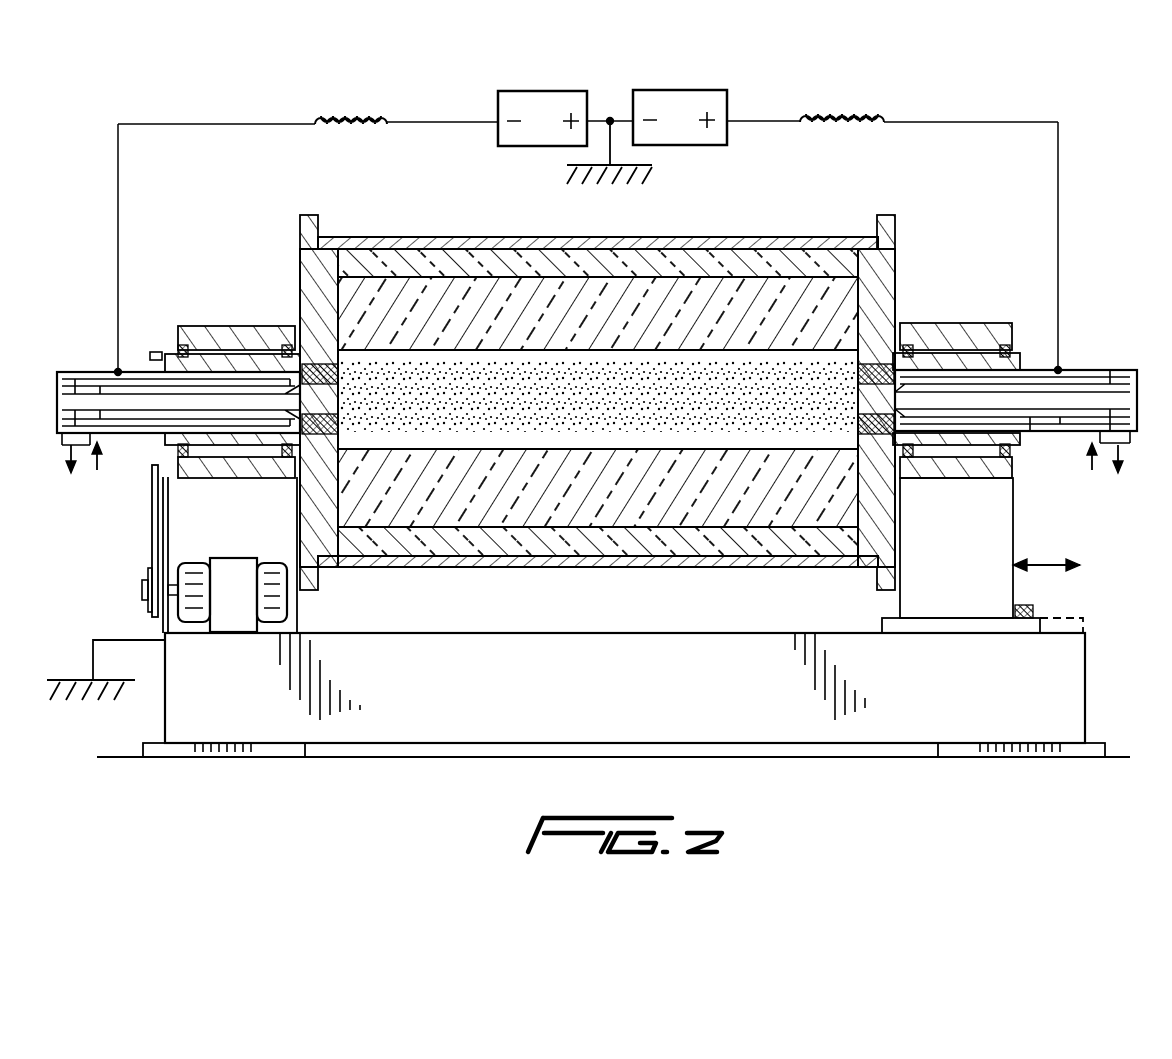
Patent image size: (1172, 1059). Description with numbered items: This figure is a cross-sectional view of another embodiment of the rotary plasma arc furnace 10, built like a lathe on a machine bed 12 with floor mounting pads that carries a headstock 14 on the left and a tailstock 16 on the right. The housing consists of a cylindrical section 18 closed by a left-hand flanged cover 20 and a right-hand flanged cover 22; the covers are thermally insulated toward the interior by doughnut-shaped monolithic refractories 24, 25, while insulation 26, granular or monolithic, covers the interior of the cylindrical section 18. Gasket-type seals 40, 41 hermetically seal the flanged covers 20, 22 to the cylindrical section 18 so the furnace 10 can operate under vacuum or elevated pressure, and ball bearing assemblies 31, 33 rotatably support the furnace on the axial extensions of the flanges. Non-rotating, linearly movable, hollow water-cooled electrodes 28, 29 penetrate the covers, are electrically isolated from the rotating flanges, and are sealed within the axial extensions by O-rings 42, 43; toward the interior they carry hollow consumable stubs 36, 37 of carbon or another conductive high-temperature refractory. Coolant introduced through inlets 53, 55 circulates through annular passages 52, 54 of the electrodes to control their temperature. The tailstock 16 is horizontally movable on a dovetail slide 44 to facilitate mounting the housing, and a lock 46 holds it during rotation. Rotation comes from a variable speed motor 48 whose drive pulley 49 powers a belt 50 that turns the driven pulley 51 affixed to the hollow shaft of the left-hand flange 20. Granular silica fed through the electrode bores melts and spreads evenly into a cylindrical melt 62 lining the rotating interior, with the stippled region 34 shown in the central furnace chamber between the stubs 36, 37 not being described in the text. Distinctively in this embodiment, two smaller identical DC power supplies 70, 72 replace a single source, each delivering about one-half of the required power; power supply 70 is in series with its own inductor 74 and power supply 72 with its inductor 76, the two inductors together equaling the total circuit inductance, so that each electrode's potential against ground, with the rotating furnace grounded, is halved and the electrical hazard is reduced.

The furnace 10 is at (405, 230).
The machine bed 12 is at (1085, 672).
The headstock 14 is at (255, 325).
The tailstock 16 is at (1013, 522).
The cylindrical section 18 is at (551, 236).
The left-hand flanged cover 20 is at (300, 250).
The right-hand flanged cover 22 is at (900, 264).
The doughnut-shaped monolithic refractory 24 is at (345, 357).
The doughnut-shaped monolithic refractory 25 is at (856, 358).
The insulation 26 is at (740, 252).
The electrode 28 is at (70, 370).
The electrode 29 is at (1105, 370).
The ball bearing assembly 31 is at (178, 345).
The ball bearing assembly 33 is at (1015, 350).
The charge material 34 is at (513, 415).
The consumable stub 36 is at (345, 413).
The consumable stub 37 is at (855, 419).
The gasket-type seal 40 is at (310, 218).
The gasket-type seal 41 is at (886, 218).
The O-ring 42 is at (240, 440).
The O-ring 43 is at (955, 352).
The dovetail slide 44 is at (1050, 620).
The lock 46 is at (1025, 606).
The variable speed motor 48 is at (250, 605).
The drive pulley 49 is at (142, 586).
The belt 50 is at (152, 536).
The driven pulley 51 is at (148, 355).
The annular passage 52 is at (1060, 433).
The inlet 53 is at (1092, 463).
The annular passage 54 is at (128, 433).
The inlet 55 is at (105, 470).
The cylindrical melt 62 is at (618, 328).
The DC power supply 70 is at (513, 90).
The DC power supply 72 is at (730, 89).
The inductor 74 is at (325, 100).
The inductor 76 is at (889, 102).